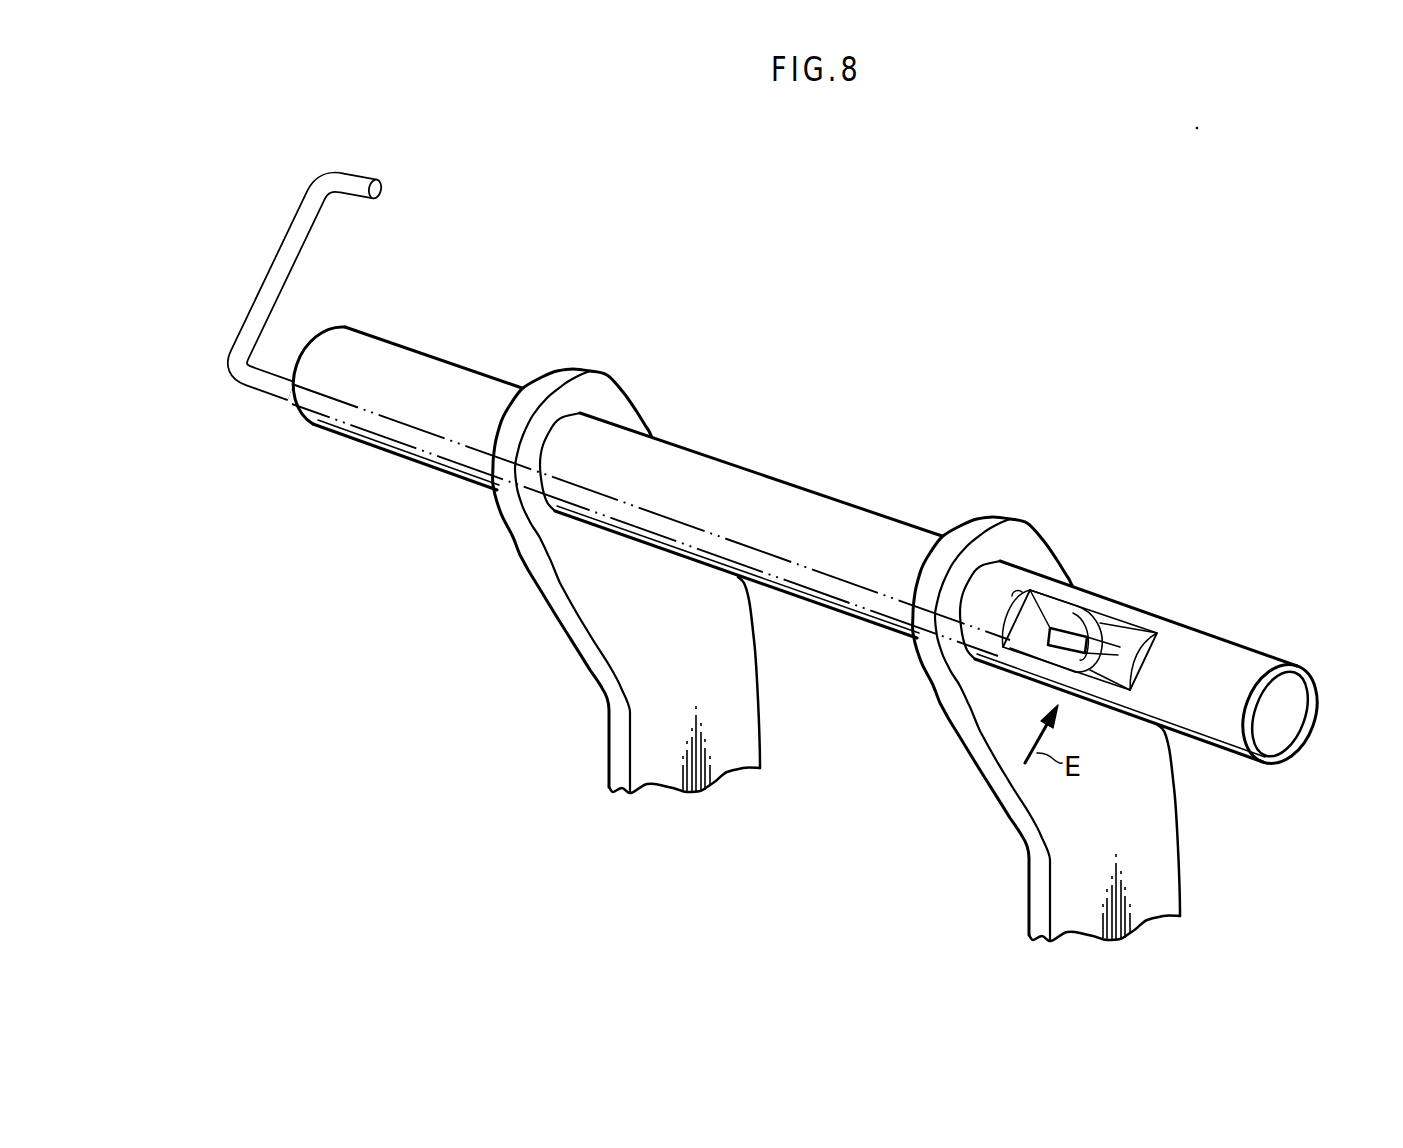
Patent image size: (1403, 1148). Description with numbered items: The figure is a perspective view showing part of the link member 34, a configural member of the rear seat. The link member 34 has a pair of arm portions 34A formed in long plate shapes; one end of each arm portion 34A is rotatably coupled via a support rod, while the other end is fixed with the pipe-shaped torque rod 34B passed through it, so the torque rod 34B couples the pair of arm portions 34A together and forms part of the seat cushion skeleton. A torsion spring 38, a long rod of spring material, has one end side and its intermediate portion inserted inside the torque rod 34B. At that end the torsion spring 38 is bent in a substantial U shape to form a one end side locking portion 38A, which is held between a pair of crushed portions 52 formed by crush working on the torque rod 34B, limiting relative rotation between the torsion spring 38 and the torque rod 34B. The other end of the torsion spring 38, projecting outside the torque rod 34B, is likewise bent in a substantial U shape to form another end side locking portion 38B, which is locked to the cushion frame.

The link member 34 is at (1182, 850).
The arm portions 34A is at (584, 662).
The torque rod 34B is at (818, 494).
The torsion spring 38 is at (672, 517).
The one end side locking portion 38A is at (1074, 610).
The other end side locking portion 38B is at (363, 173).
The crushed portions 52 is at (1122, 647).